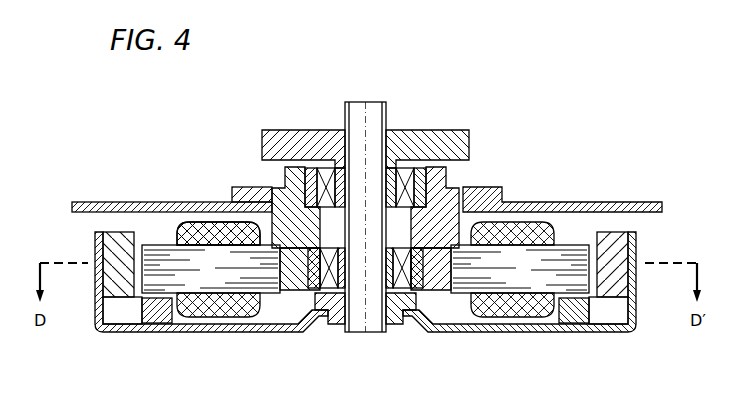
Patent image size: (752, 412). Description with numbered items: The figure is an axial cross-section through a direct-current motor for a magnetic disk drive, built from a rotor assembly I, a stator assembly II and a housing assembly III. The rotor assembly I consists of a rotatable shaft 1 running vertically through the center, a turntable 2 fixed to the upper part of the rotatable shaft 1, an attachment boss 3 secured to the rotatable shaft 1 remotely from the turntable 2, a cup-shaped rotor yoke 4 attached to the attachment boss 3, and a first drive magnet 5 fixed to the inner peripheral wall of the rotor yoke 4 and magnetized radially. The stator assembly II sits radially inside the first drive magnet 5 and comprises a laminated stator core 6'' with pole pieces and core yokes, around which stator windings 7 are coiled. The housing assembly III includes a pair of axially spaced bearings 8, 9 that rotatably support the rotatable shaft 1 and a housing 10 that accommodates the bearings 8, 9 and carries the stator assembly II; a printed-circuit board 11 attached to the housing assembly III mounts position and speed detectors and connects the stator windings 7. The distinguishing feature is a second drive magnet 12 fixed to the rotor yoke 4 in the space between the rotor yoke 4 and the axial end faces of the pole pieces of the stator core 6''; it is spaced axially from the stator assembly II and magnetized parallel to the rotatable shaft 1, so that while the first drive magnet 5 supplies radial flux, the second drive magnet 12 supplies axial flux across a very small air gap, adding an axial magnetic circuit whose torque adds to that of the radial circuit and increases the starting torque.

The rotatable shaft 1 is at (379, 97).
The turntable 2 is at (305, 129).
The attachment boss 3 is at (333, 325).
The rotor yoke 4 is at (129, 333).
The first drive magnet 5 is at (613, 230).
The stator core 6'' is at (512, 309).
The stator windings 7 is at (212, 312).
The bearing 8 is at (423, 165).
The bearing 9 is at (317, 293).
The housing 10 is at (483, 187).
The printed-circuit board 11 is at (128, 201).
The second drive magnet 12 is at (578, 323).
The rotor assembly I is at (587, 342).
The stator assembly II is at (214, 256).
The housing assembly III is at (249, 180).